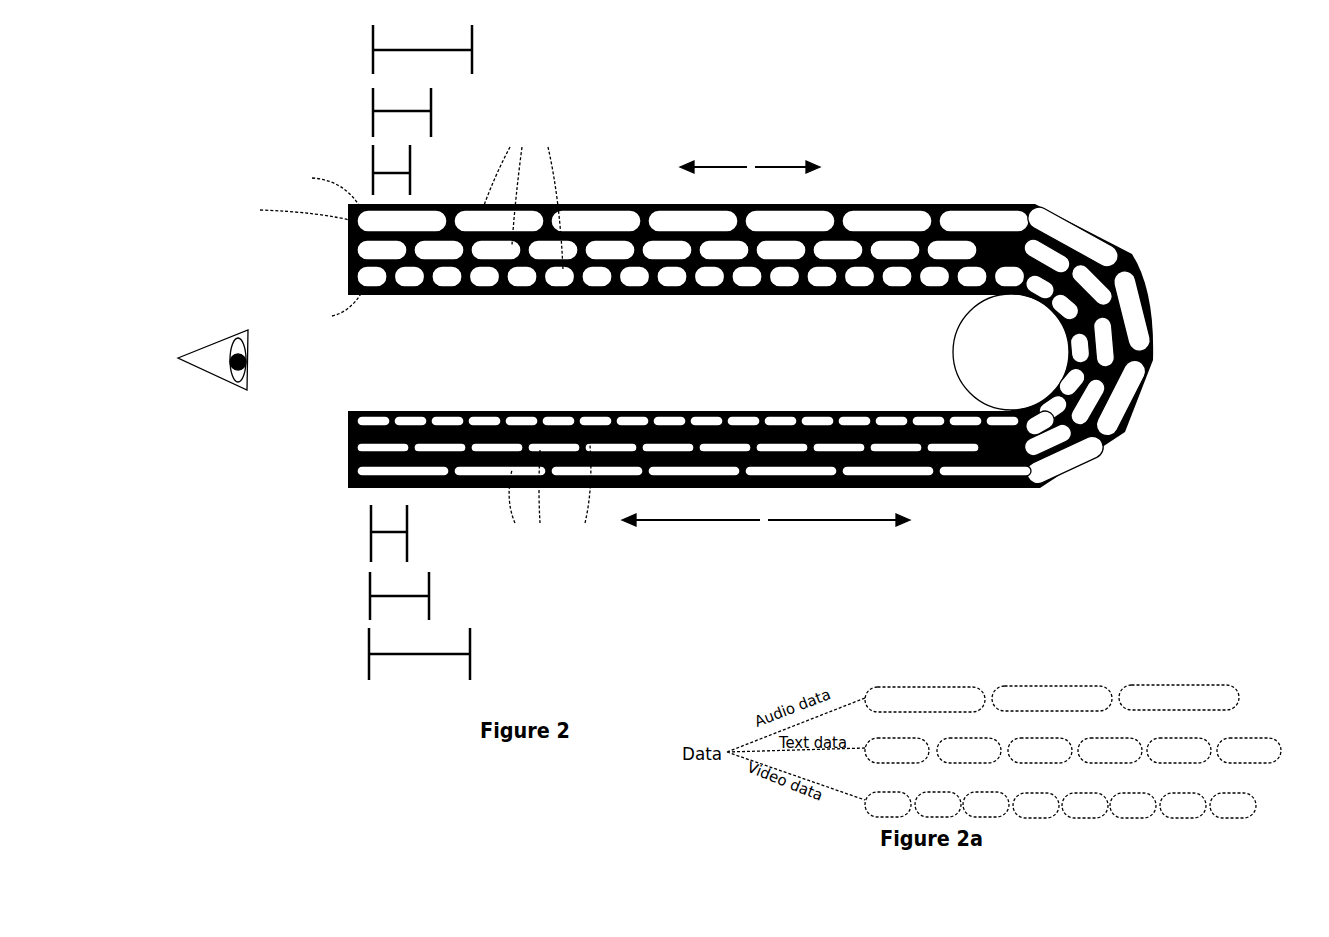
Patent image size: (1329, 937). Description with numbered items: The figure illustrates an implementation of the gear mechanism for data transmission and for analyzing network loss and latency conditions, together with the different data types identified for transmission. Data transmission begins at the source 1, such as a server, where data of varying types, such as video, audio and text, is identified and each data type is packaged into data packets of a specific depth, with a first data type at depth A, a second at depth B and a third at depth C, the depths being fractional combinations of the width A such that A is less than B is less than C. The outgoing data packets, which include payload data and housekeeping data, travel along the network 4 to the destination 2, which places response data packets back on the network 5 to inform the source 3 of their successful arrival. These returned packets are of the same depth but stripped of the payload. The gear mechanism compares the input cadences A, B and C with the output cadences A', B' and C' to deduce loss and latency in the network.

The source 1 is at (654, 256).
The destination 2 is at (1029, 345).
The source receiving the response 3 is at (653, 548).
The bidirectional data flow direction of first stream 4 is at (750, 129).
The bidirectional data flow direction of returning stream 5 is at (766, 557).